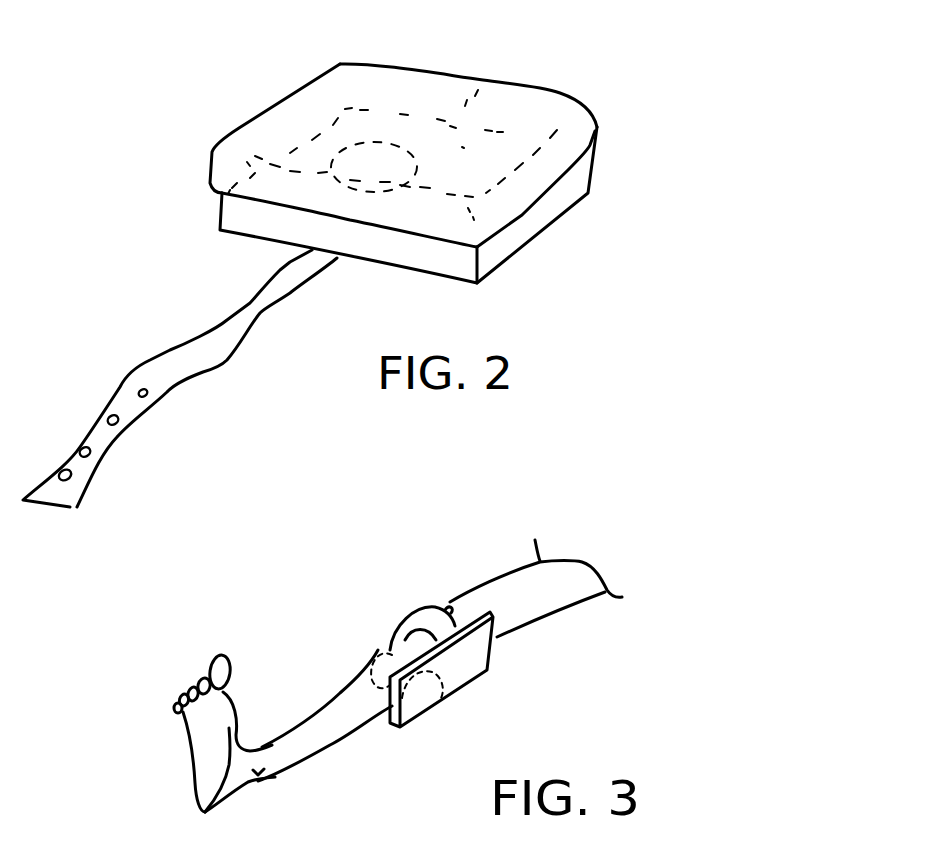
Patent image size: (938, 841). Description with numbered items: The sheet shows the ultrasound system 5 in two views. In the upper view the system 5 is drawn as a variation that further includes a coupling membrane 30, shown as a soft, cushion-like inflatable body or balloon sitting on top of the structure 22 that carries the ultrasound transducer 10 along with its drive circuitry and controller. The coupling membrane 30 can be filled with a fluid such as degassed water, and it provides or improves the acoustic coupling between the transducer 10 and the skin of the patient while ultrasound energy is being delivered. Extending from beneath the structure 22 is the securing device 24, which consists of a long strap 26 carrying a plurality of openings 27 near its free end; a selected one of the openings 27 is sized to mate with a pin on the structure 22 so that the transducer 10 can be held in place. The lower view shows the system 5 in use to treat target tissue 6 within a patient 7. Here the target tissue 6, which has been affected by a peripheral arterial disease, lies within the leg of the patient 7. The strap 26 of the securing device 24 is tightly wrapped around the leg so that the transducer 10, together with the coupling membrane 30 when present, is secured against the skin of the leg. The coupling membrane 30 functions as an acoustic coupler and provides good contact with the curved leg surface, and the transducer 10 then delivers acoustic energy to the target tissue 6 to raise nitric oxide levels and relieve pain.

In FIG. 2, the ultrasound system 5 is at (708, 92).
In FIG. 3, the ultrasound system 5 is at (473, 673).
In FIG. 2, the ultrasound transducer 10 is at (483, 80).
In FIG. 3, the ultrasound transducer 10 is at (409, 735).
In FIG. 2, the coupling membrane 30 is at (594, 127).
In FIG. 2, the structure 22 is at (523, 240).
In FIG. 2, the securing device 24 is at (203, 367).
In FIG. 3, the securing device 24 is at (423, 612).
In FIG. 2, the strap 26 is at (227, 317).
In FIG. 2, the openings 27 is at (113, 413).
In FIG. 3, the target tissue 6 is at (390, 650).
In FIG. 3, the patient 7 is at (573, 607).